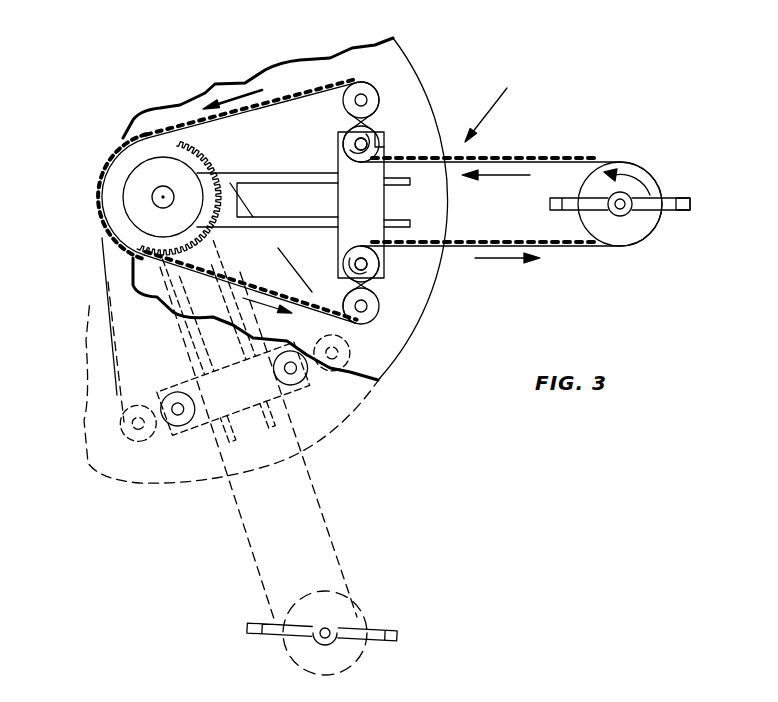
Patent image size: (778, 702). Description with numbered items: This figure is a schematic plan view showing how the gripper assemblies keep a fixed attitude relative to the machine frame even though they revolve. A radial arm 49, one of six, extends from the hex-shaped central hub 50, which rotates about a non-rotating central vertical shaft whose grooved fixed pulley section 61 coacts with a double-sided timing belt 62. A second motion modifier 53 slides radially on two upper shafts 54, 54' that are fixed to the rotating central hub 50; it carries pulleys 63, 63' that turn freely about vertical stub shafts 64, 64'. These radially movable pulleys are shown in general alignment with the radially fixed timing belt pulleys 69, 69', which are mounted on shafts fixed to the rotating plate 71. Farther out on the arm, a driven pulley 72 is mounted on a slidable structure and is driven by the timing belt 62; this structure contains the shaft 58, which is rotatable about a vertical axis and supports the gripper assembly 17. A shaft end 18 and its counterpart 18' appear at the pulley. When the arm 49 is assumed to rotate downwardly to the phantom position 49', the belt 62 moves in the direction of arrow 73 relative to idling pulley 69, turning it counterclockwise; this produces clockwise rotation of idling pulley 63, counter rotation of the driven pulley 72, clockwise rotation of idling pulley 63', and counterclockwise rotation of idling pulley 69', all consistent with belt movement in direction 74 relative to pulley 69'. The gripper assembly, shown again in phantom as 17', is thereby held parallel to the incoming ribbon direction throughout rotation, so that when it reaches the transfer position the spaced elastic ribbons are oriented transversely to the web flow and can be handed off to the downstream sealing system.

The gripper assembly 17 is at (541, 210).
The gripper assembly in phantom position 17' is at (344, 633).
The pulley shaft 18 is at (605, 192).
The pulley shaft end 18' is at (709, 189).
The radial arm 49 is at (493, 101).
The radial arm in rotated position 49' is at (237, 416).
The central hub 50 is at (213, 190).
The second motion modifier 53 is at (378, 213).
The upper shaft 54 is at (267, 188).
The upper shaft 54' is at (271, 237).
The shaft 58 is at (620, 217).
The fixed pulley section 61 is at (118, 170).
The timing belt 62 is at (307, 86).
The pulley 63 is at (404, 123).
The pulley 63' is at (388, 269).
The vertical stub shaft 64 is at (333, 125).
The vertical stub shaft 64' is at (333, 258).
The timing belt pulley 69 is at (390, 79).
The timing belt pulley 69' is at (396, 318).
The rotating plate 71 is at (404, 94).
The driven pulley 72 is at (645, 172).
The arrow 73 is at (238, 98).
The direction 74 is at (260, 298).